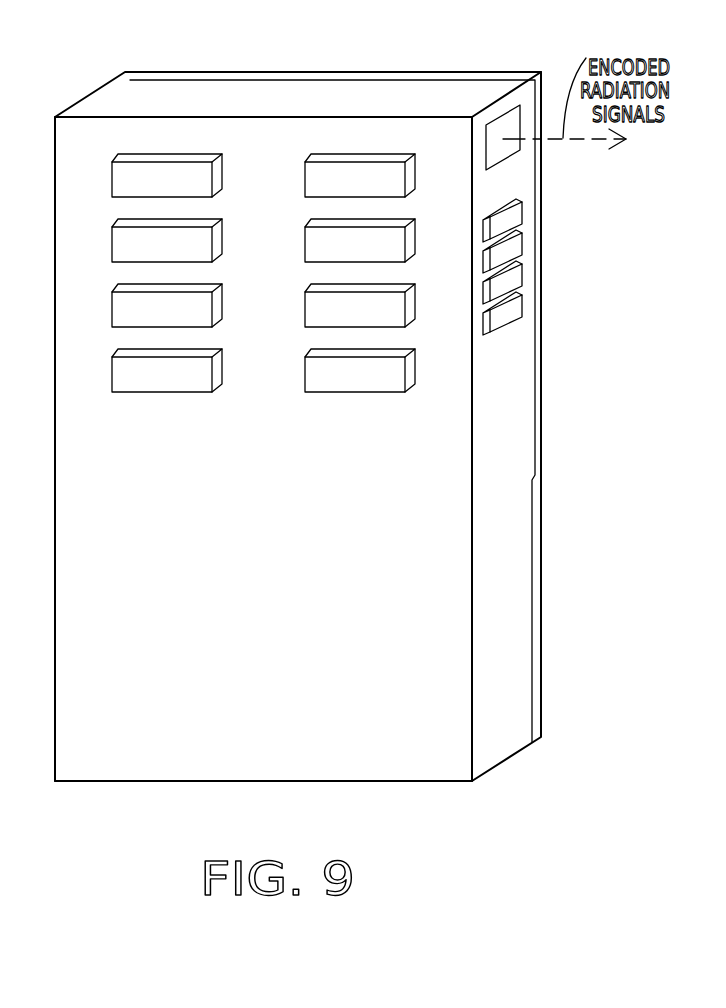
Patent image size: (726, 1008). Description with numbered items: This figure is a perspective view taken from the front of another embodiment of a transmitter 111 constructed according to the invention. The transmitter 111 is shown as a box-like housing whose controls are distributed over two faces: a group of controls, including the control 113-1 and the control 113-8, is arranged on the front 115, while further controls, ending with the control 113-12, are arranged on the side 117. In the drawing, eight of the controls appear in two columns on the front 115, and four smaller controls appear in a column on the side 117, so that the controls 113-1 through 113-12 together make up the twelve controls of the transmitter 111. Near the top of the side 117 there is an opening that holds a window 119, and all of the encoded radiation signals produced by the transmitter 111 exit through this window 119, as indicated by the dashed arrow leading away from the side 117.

The transmitter 111 is at (205, 806).
The control 113-1 is at (199, 168).
The control 113-8 is at (335, 380).
The control 113-12 is at (510, 320).
The front 115 is at (343, 783).
The side 117 is at (505, 545).
The window 119 is at (505, 152).